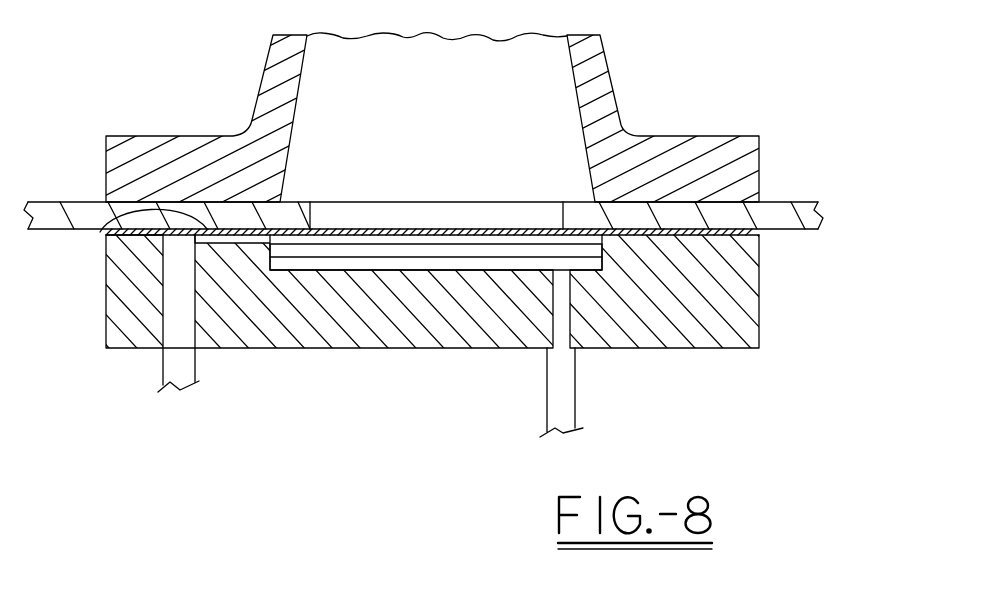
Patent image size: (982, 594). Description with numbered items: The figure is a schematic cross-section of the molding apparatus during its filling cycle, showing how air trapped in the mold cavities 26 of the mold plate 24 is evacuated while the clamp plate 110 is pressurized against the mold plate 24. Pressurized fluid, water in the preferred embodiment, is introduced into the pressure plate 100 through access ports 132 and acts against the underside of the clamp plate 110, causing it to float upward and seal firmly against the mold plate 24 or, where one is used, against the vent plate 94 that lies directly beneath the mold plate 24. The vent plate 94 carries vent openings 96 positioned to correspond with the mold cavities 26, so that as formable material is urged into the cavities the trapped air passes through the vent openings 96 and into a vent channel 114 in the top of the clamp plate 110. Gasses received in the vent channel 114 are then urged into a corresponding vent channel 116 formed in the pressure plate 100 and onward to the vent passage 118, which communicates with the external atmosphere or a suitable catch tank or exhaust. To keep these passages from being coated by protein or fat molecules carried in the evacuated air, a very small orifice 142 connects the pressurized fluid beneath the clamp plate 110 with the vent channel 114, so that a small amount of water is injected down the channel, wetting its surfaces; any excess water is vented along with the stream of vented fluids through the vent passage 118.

The mold plate 24 is at (797, 202).
The mold cavities 26 is at (310, 213).
The vent plate 94 is at (720, 234).
The vent openings 96 is at (470, 230).
The pressure plate 100 is at (330, 348).
The clamp plate 110 is at (425, 257).
The vent channels 114 is at (340, 243).
The vent channels 116 is at (100, 232).
The vent passage 118 is at (172, 278).
The access ports 132 is at (571, 323).
The orifice 142 is at (436, 290).